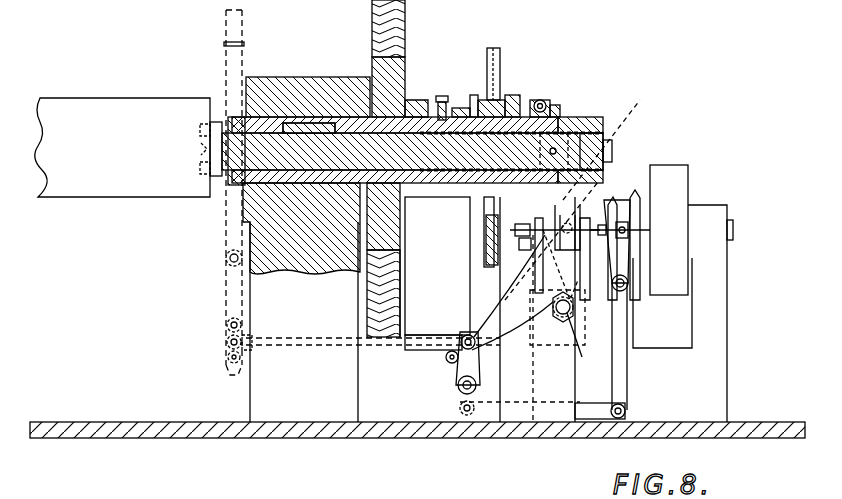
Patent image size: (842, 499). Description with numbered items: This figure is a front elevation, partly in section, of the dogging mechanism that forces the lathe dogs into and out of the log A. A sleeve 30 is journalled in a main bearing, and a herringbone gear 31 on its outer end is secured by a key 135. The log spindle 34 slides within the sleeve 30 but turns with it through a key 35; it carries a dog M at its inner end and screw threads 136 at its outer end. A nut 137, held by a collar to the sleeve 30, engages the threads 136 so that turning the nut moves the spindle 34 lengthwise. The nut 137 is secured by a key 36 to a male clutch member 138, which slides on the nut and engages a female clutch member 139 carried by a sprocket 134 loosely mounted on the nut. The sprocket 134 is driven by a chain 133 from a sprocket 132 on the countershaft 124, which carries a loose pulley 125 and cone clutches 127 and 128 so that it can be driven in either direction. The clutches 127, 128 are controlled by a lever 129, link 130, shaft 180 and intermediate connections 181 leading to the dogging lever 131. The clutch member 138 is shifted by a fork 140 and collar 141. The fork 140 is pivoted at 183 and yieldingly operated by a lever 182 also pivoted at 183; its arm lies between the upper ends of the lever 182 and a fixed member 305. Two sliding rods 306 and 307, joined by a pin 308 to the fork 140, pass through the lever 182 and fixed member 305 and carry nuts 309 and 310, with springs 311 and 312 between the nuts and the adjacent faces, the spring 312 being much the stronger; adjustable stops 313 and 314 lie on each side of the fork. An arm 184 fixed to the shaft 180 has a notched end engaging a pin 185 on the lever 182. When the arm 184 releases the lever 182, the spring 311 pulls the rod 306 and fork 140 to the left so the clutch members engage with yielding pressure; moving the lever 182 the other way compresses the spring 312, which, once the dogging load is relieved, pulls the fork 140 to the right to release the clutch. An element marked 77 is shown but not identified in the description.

The log A is at (82, 110).
The dog M is at (215, 128).
The sleeve 30 is at (232, 180).
The herringbone gear 31 is at (382, 30).
The log spindle 34 is at (590, 132).
The key 35 is at (300, 130).
The key 36 is at (552, 126).
The pin 77 is at (446, 358).
The countershaft 124 is at (740, 228).
The loose pulley 125 is at (678, 182).
The cone clutch 127 is at (700, 205).
The cone clutch 128 is at (640, 212).
The lever 129 is at (625, 385).
The link 130 is at (590, 408).
The dogging lever 131 is at (228, 300).
The sprocket 132 is at (490, 262).
The chain 133 is at (488, 64).
The sprocket 134 is at (500, 92).
The key 135 is at (425, 112).
The screw threads 136 is at (620, 125).
The nut 137 is at (580, 128).
The male clutch member 138 is at (525, 100).
The female clutch member 139 is at (530, 98).
The fork 140 is at (609, 141).
The collar 141 is at (560, 115).
The shaft 180 is at (460, 408).
The intermediate connections 181 is at (485, 314).
The lever 182 is at (615, 310).
The pivot 183 is at (576, 350).
The arm 184 is at (458, 384).
The pin 185 is at (458, 340).
The fixed member 305 is at (520, 395).
The sliding rod 306 is at (486, 212).
The sliding rod 307 is at (628, 228).
The pin 308 is at (608, 166).
The nut 309 is at (515, 232).
The nut 310 is at (628, 242).
The spring 311 is at (520, 246).
The spring 312 is at (626, 240).
The adjustable stop 313 is at (545, 238).
The adjustable stop 314 is at (640, 266).